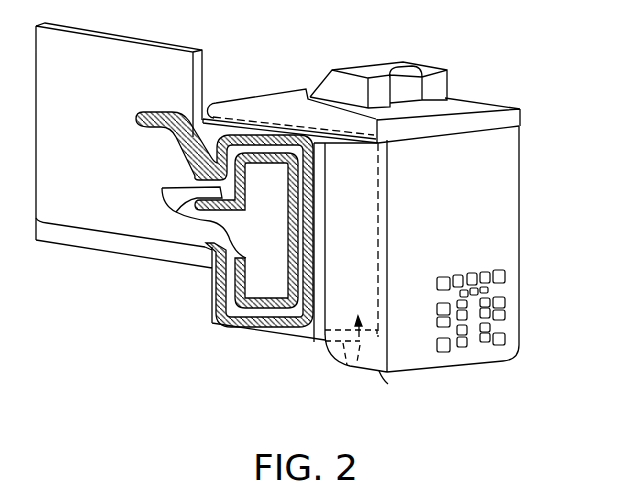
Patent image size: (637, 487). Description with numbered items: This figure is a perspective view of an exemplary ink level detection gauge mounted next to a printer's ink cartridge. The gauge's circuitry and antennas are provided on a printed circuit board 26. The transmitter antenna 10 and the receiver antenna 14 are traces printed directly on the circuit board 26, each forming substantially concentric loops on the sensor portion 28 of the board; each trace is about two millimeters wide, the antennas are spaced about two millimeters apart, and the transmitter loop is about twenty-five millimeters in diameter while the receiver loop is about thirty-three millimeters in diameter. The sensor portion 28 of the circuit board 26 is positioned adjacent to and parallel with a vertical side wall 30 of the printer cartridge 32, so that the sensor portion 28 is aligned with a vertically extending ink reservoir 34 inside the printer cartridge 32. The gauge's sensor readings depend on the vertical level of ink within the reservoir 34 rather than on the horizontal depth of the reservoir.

The transmitter antenna 10 is at (255, 297).
The receiver antenna 14 is at (245, 329).
The printed circuit board 26 is at (70, 246).
The sensor portion 28 is at (208, 295).
The vertical side wall 30 is at (380, 372).
The printer cartridge 32 is at (544, 126).
The ink reservoir 34 is at (347, 366).